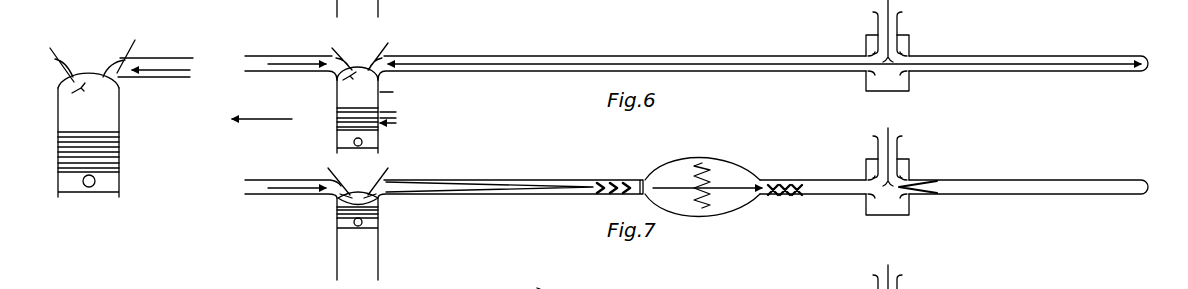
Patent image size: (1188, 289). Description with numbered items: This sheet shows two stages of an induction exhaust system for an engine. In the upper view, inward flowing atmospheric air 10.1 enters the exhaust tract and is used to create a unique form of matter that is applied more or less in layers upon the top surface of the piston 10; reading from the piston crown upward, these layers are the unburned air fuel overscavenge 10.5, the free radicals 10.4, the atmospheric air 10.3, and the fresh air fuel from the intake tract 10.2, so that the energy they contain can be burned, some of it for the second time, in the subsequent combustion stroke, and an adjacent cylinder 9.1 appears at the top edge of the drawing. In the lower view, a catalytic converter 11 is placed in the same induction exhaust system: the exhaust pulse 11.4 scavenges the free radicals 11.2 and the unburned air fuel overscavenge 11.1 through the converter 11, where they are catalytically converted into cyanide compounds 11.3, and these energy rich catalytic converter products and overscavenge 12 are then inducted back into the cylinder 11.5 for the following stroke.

In FIG. 6, the cylinder 9.1 is at (320, 8).
In FIG. 6, the piston 10 is at (403, 118).
In FIG. 6, the atmospheric air 10.1 is at (446, 51).
In FIG. 6, the fresh air fuel from the intake tract 10.2 is at (122, 108).
In FIG. 6, the atmospheric air 10.3 is at (122, 137).
In FIG. 6, the free radicals 10.4 is at (122, 146).
In FIG. 6, the unburned air fuel overscavenge 10.5 is at (122, 156).
In FIG. 7, the catalytic converter 11 is at (710, 157).
In FIG. 7, the unburned air fuel overscavenge 11.1 is at (477, 173).
In FIG. 7, the free radicals 11.2 is at (605, 173).
In FIG. 7, the cyanide compounds 11.3 is at (785, 172).
In FIG. 7, the exhaust pulse 11.4 is at (995, 177).
In FIG. 7, the cylinder 11.5 is at (323, 218).
In FIG. 7, the catalytic converter products and overscavenge 12 is at (537, 288).